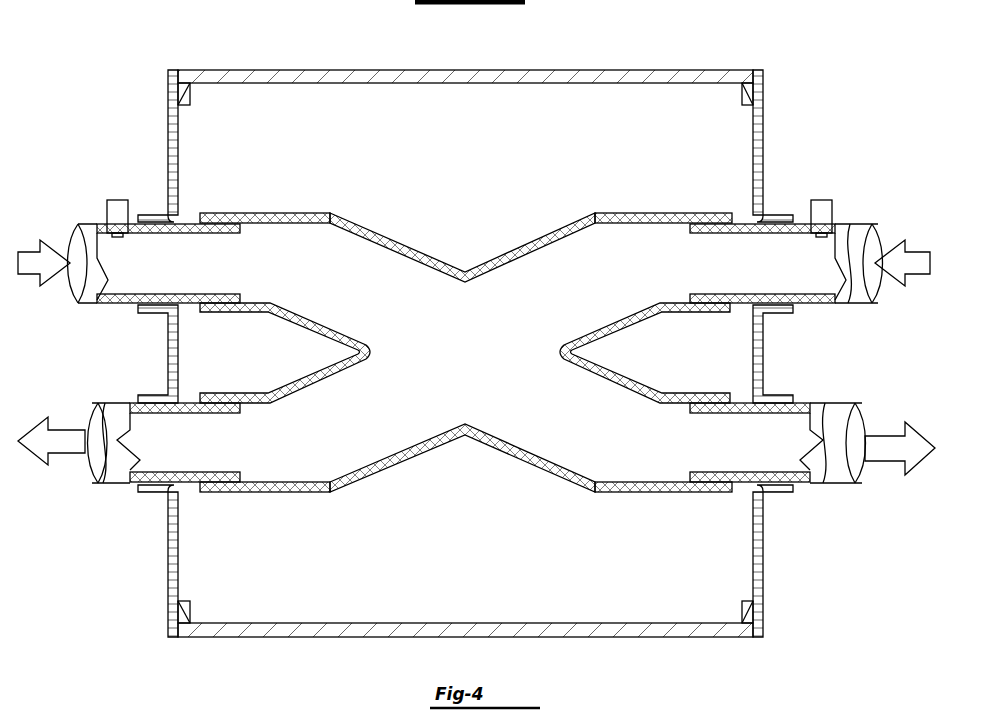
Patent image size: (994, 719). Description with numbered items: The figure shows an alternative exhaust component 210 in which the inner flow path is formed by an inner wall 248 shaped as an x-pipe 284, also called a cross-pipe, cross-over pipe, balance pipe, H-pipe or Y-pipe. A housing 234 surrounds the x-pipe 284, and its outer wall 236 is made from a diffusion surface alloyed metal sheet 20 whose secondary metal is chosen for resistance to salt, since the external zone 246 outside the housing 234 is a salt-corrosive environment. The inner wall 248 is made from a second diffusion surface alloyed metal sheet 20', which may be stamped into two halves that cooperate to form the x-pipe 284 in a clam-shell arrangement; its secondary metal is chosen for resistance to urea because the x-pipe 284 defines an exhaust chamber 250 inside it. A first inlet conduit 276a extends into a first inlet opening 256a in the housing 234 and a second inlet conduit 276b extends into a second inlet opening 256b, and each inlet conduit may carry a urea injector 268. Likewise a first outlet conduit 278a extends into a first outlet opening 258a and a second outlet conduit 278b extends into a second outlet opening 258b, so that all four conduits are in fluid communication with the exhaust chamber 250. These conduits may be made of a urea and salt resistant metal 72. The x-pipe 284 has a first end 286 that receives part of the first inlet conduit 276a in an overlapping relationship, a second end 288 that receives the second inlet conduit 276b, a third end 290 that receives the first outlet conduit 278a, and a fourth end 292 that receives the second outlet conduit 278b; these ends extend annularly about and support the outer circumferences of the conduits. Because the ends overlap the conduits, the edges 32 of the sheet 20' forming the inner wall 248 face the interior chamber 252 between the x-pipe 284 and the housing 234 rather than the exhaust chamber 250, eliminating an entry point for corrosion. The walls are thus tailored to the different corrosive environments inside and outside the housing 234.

The exhaust component 210 is at (150, 72).
The diffusion surface alloyed metal sheet 20 is at (465, 357).
The diffusion surface alloyed metal sheet 20' is at (465, 369).
The outer wall 236 is at (254, 68).
The housing 234 is at (772, 72).
The external zone 246 is at (270, 674).
The interior chamber 252 is at (485, 148).
The exhaust chamber 250 is at (478, 372).
The inner wall 248 is at (540, 238).
The x-pipe 284 is at (413, 470).
The first end 286 is at (235, 210).
The second end 288 is at (690, 210).
The third end 290 is at (240, 492).
The fourth end 292 is at (683, 492).
The edges 32 is at (200, 220).
The urea and salt resistant metal 72 is at (110, 303).
The urea injector 268 is at (118, 204).
The first inlet conduit 276a is at (82, 222).
The second inlet conduit 276b is at (860, 222).
The first outlet conduit 278a is at (112, 470).
The second outlet conduit 278b is at (832, 470).
The first inlet opening 256a is at (156, 313).
The second inlet opening 256b is at (778, 313).
The first outlet opening 258a is at (147, 493).
The second outlet opening 258b is at (787, 493).